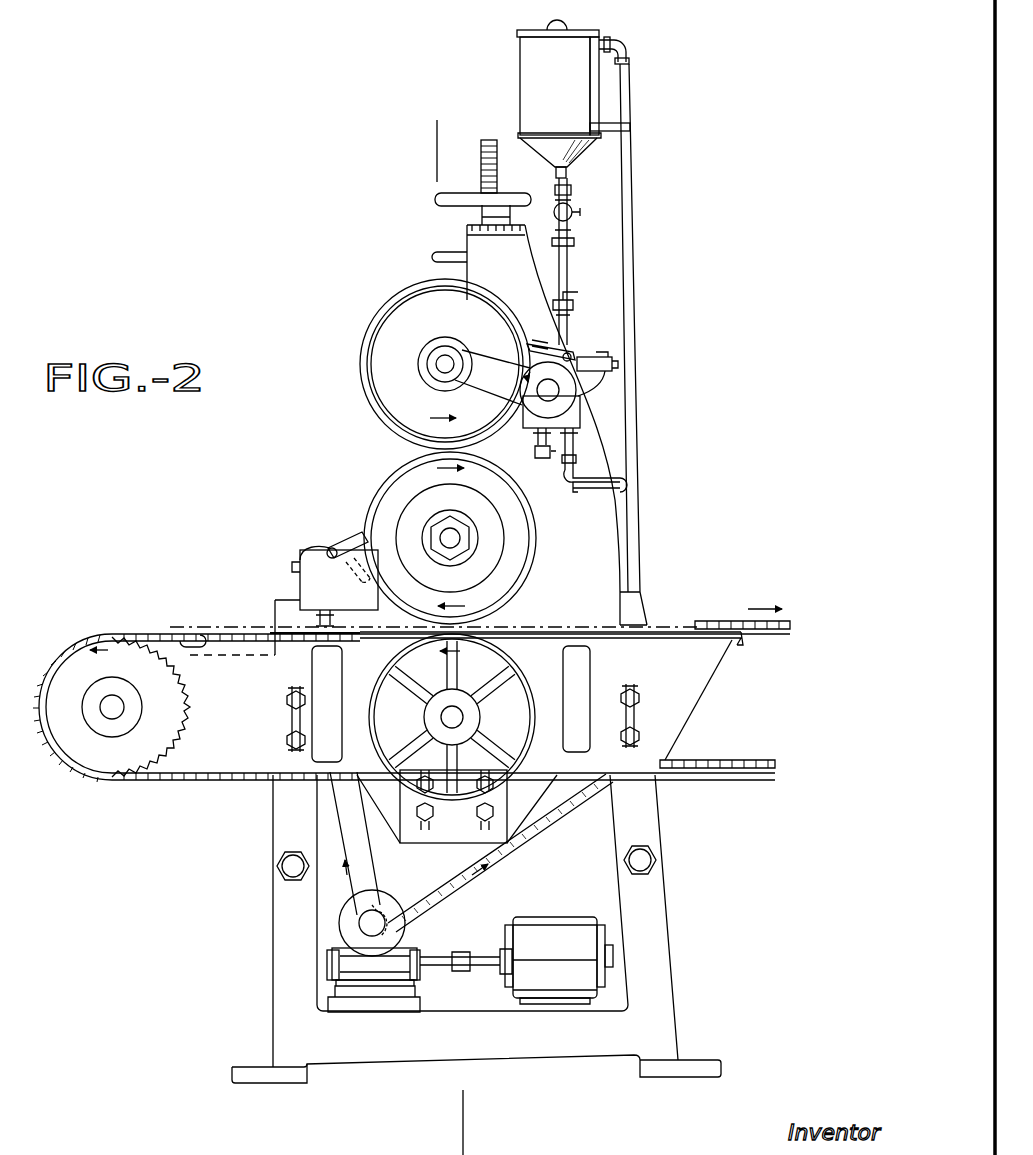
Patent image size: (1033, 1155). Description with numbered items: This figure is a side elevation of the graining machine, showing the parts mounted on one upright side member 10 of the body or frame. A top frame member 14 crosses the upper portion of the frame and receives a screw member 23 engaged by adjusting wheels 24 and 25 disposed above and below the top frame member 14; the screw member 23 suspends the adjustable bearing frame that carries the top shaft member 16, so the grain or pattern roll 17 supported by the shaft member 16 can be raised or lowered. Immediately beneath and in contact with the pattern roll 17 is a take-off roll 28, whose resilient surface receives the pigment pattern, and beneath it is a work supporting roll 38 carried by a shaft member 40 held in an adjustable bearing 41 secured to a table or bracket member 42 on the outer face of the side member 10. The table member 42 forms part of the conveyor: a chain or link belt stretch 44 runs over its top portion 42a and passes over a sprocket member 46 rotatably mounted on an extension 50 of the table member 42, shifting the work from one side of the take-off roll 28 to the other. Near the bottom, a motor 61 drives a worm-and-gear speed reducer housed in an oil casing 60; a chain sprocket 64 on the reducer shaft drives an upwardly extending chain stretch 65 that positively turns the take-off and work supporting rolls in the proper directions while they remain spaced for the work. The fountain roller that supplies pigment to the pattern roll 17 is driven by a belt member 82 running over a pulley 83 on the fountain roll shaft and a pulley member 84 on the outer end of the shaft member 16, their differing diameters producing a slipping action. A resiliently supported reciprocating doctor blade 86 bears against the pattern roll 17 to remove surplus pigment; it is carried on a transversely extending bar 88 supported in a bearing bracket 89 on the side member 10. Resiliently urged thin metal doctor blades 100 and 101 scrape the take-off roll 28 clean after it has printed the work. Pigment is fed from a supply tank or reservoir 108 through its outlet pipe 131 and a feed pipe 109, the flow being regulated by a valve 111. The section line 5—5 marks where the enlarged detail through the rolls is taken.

The section line 5— 5 is at (455, 157).
The upright side member 10 is at (660, 924).
The top frame member 14 is at (468, 233).
The top shaft member 16 is at (448, 360).
The grain or pattern roll 17 is at (361, 372).
The screw member 23 is at (491, 170).
The adjusting wheel 24 is at (436, 199).
The adjusting wheel 25 is at (437, 257).
The take-off roll 28 is at (373, 498).
The work supporting roll 38 is at (522, 692).
The shaft member 40 is at (455, 718).
The adjustable bearing 41 is at (459, 835).
The table or bracket member 42 is at (527, 807).
The top portion of table member 42a is at (678, 636).
The chain or link belt stretch 44 is at (730, 764).
The sprocket member 46 is at (116, 773).
The extension 50 is at (231, 776).
The oil casing 60 is at (402, 940).
The motor 61 is at (558, 928).
The chain sprocket 64 is at (395, 905).
The chain stretch 65 is at (527, 832).
The belt member 82 is at (492, 385).
The pulley 83 is at (566, 400).
The pulley member 84 is at (442, 363).
The doctor blade 86 is at (546, 346).
The transversely extending bar 88 is at (613, 366).
The bearing bracket 89 is at (603, 392).
The doctor blade 100 is at (360, 540).
The doctor blade 101 is at (368, 560).
The supply tank or reservoir 108 is at (535, 105).
The feed pipe 109 is at (582, 261).
The valve 111 is at (570, 300).
The pipe 131 is at (571, 190).